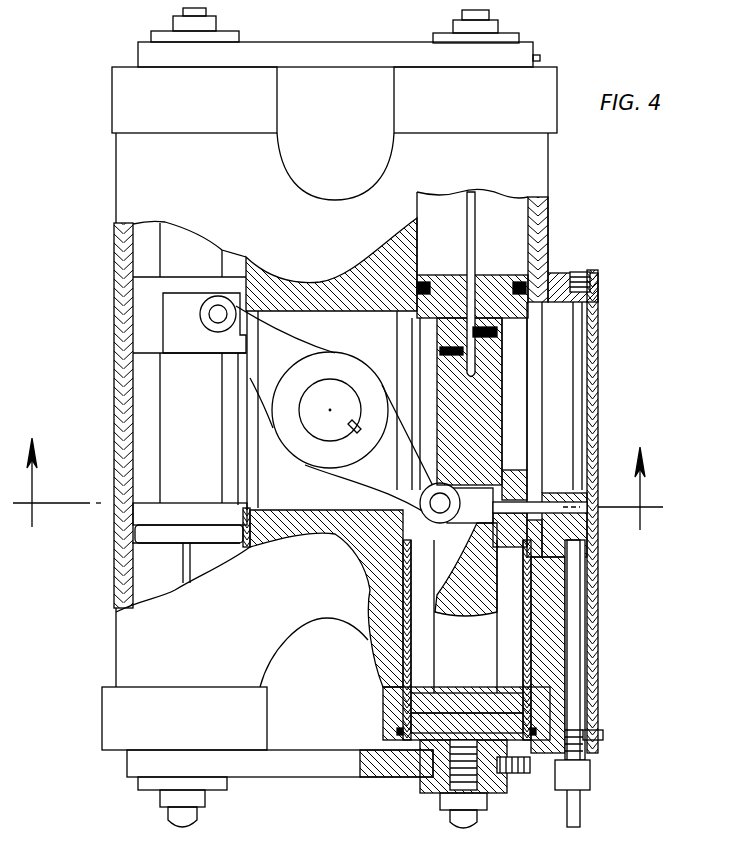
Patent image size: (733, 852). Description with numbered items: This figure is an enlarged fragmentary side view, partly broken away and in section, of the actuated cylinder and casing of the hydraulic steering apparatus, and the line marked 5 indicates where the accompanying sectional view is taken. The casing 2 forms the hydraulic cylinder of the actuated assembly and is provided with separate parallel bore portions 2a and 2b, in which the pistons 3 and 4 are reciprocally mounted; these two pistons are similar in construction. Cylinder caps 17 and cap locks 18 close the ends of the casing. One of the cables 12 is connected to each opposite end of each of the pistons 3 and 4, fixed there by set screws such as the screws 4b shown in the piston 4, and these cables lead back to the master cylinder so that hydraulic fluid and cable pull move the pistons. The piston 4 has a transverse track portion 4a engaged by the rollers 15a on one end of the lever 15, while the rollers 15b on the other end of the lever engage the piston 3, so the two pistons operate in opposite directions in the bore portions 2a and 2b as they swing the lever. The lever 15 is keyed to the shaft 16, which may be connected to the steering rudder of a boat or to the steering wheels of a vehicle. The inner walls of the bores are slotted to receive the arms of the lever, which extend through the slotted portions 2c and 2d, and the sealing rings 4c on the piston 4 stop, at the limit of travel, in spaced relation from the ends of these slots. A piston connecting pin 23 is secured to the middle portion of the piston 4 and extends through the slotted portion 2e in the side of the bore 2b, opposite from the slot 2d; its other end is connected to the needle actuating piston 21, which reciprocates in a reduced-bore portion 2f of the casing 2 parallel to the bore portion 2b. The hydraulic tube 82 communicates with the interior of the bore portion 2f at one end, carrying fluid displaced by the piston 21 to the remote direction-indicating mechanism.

The casing 2 is at (528, 160).
The bore portion 2a is at (128, 256).
The bore portion 2b is at (520, 215).
The slotted portion 2c is at (252, 453).
The slotted portion 2d is at (378, 266).
The slotted portion 2e is at (530, 337).
The reduced-bore portion 2f is at (582, 403).
The piston 3 is at (177, 407).
The piston 4 is at (490, 380).
The transverse track portion 4a is at (527, 540).
The set screws 4b is at (443, 347).
The sealing rings 4c is at (527, 290).
The piston 5 is at (337, 488).
The cables 12 is at (476, 237).
The lever 15 is at (278, 345).
The rollers 15a is at (428, 487).
The rollers 15b is at (118, 300).
The shaft 16 is at (320, 427).
The cylinder caps 17 is at (128, 90).
The cap locks 18 is at (317, 58).
The needle actuating piston 21 is at (577, 605).
The piston connecting pin 23 is at (545, 500).
The hydraulic tube 82 is at (583, 812).